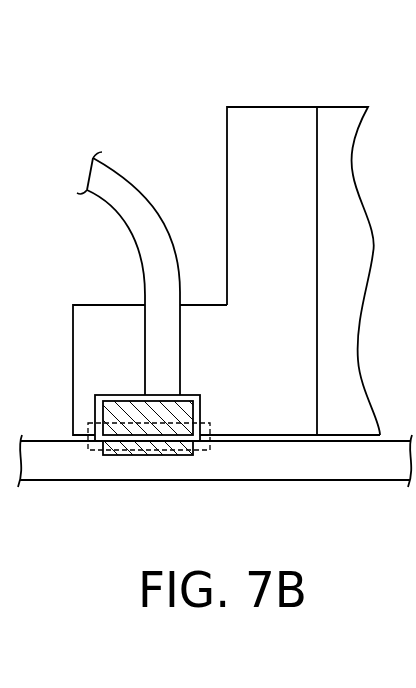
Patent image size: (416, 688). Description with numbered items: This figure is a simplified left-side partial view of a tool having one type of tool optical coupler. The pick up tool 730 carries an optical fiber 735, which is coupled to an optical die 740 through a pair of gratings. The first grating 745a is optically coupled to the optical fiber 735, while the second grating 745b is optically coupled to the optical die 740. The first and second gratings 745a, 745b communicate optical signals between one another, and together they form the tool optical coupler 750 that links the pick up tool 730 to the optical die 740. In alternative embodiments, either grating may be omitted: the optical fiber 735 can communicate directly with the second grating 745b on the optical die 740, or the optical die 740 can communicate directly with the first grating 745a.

The pick up tool 730 is at (268, 118).
The optical fiber 735 is at (118, 173).
The optical die 740 is at (310, 472).
The first grating 745a is at (128, 405).
The second grating 745b is at (182, 452).
The tool optical coupler 750 is at (88, 449).